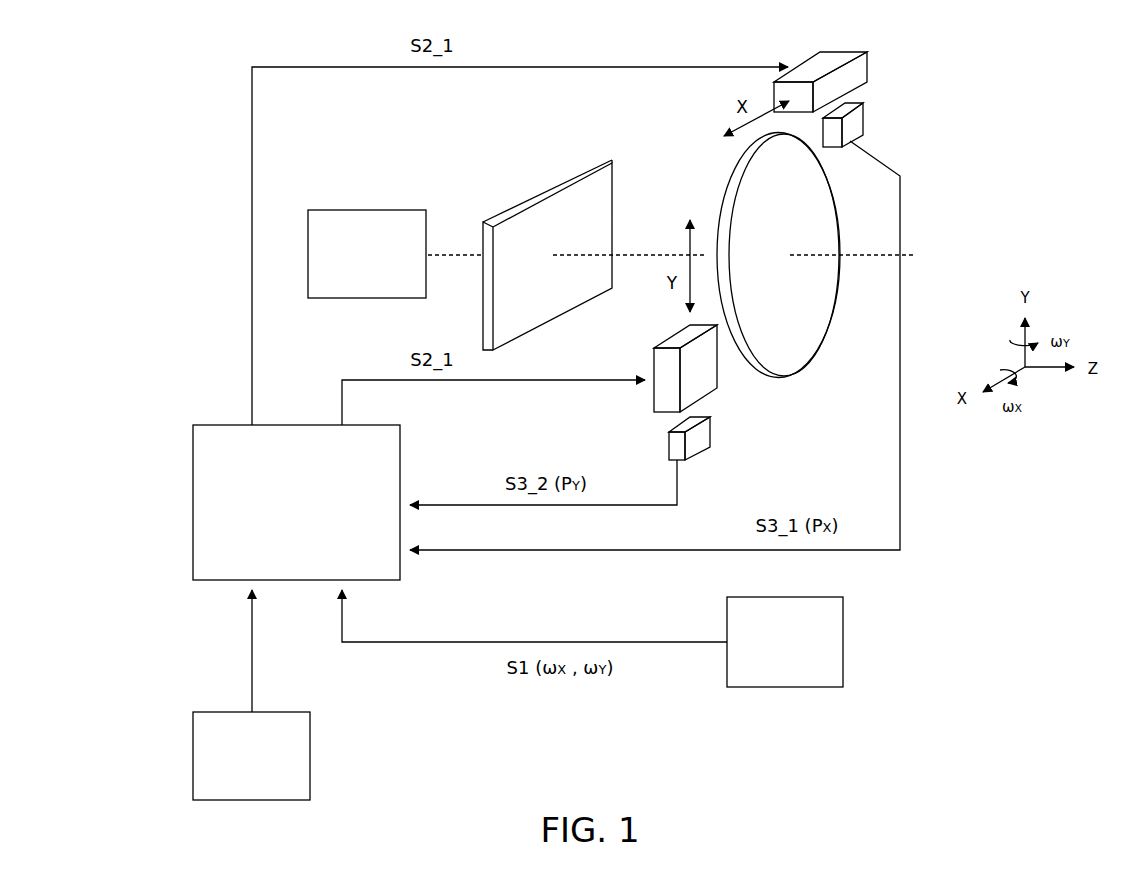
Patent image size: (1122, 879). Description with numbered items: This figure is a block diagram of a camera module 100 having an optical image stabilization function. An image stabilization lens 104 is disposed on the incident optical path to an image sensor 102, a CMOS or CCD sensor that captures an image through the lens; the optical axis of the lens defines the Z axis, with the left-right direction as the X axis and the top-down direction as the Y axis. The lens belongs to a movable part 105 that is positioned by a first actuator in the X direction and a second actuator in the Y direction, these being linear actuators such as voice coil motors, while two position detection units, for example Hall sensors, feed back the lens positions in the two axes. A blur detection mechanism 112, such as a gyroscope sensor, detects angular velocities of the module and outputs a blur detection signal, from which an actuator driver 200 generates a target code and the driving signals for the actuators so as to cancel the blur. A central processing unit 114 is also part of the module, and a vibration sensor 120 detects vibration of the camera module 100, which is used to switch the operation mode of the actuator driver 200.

The camera module 100 is at (1047, 22).
The image sensor 102 is at (550, 185).
The image stabilization lens 104 is at (795, 276).
The movable part 105 is at (795, 363).
The blur detection mechanism 112 is at (845, 642).
The central processing unit 114 is at (371, 210).
The vibration sensor 120 is at (312, 757).
The actuator driver 200 is at (193, 502).